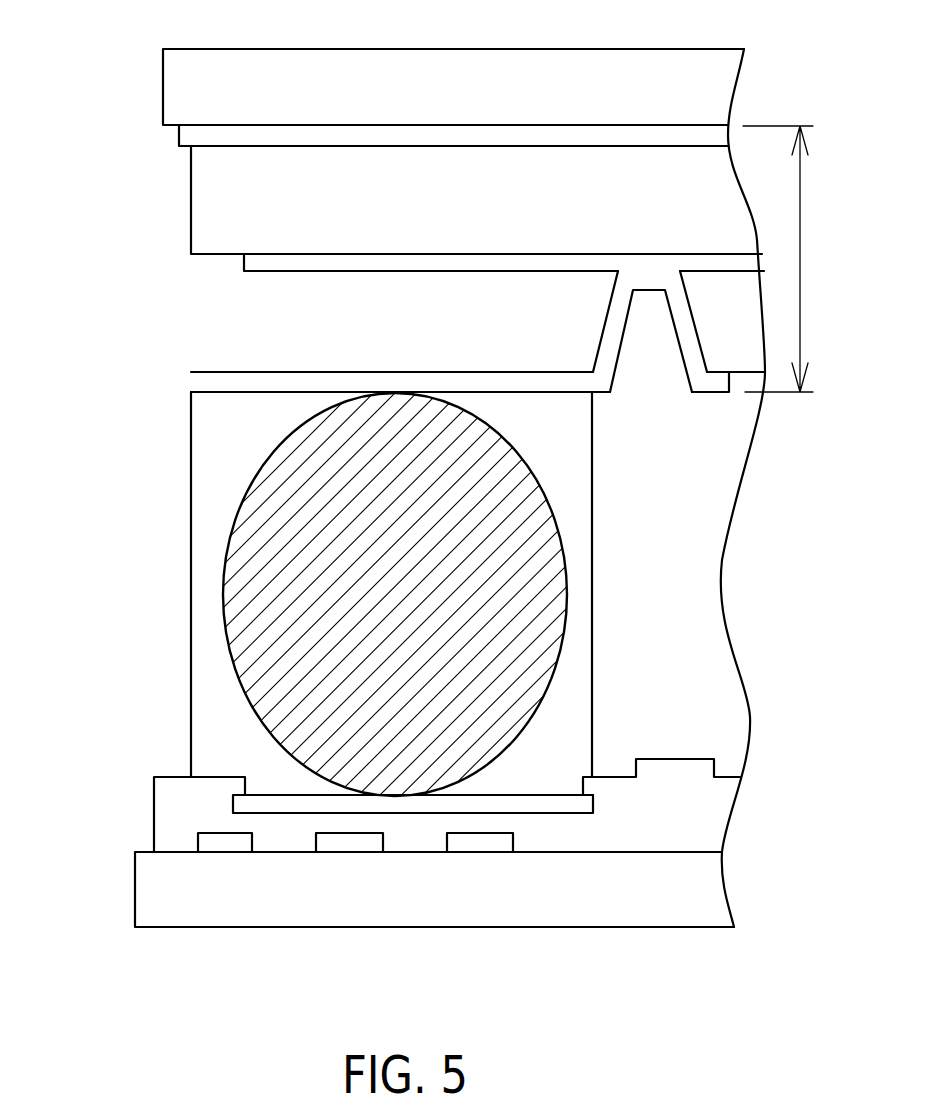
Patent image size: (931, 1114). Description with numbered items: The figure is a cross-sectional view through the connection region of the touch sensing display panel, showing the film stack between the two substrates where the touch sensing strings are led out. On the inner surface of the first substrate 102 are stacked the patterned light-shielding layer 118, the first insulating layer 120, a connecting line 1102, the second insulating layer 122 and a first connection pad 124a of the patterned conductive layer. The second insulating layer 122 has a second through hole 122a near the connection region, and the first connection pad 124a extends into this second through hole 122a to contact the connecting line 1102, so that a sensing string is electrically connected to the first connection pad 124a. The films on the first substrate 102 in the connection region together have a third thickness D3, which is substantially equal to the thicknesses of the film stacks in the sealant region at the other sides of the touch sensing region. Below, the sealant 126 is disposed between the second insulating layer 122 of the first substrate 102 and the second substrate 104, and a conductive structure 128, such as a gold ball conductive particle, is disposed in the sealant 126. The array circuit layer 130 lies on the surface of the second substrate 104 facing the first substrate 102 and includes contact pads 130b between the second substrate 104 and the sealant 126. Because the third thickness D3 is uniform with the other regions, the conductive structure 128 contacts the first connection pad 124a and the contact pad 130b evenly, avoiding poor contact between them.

The first substrate 102 is at (192, 82).
The patterned light-shielding layer 118 is at (192, 136).
The first insulating layer 120 is at (208, 198).
The connecting line 1102 is at (258, 262).
The second insulating layer 122 is at (411, 341).
The second through hole 122a is at (693, 318).
The first connection pad 124a is at (210, 378).
The sealant 126 is at (208, 558).
The conductive structure 128 is at (262, 642).
The array circuit layer 130 is at (389, 805).
The contact pad 130b is at (250, 797).
The second substrate 104 is at (150, 893).
The third thickness D3 is at (793, 259).